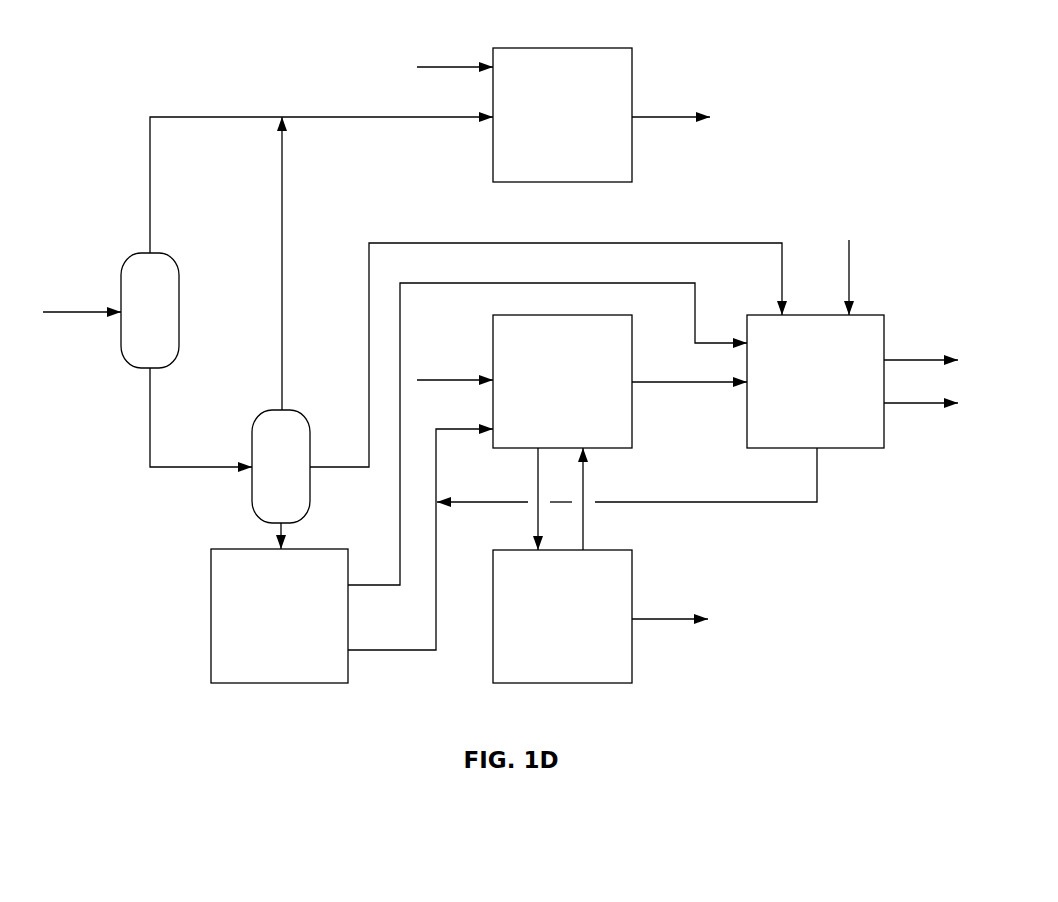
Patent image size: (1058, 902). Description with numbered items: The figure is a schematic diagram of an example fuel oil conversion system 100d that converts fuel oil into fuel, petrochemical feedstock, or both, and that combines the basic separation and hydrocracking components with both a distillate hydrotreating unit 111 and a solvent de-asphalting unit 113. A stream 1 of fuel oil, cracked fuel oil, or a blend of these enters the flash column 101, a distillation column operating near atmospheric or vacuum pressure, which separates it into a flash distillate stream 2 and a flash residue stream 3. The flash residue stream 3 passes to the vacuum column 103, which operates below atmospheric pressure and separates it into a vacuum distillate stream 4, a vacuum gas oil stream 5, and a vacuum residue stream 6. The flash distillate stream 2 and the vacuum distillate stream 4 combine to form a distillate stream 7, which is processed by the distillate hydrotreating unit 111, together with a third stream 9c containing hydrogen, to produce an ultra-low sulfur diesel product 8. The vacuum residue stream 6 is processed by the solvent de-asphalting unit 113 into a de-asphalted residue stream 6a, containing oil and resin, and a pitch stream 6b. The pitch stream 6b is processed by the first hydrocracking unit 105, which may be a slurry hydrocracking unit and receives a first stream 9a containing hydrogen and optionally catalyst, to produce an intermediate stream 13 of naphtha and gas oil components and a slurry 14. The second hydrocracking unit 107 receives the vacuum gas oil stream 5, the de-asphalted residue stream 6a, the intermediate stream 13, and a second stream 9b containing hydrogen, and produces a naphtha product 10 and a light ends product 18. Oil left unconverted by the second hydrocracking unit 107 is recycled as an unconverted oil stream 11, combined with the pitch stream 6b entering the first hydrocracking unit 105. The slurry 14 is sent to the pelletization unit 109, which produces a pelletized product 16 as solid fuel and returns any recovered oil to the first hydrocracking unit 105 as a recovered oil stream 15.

The system 100d is at (860, 644).
The flash column 101 is at (150, 310).
The vacuum column 103 is at (281, 466).
The first hydrocracking unit 105 is at (562, 381).
The second hydrocracking unit 107 is at (815, 381).
The pelletization unit 109 is at (562, 616).
The distillate hydrotreating unit 111 is at (562, 115).
The solvent de-asphalting unit 113 is at (279, 616).
The stream 1 is at (80, 312).
The flash distillate stream 2 is at (213, 117).
The flash residue stream 3 is at (200, 467).
The vacuum distillate stream 4 is at (282, 372).
The vacuum gas oil stream 5 is at (369, 372).
The vacuum residue stream 6 is at (281, 530).
The de-asphalted residue stream 6a is at (400, 532).
The pitch stream 6b is at (436, 629).
The distillate stream 7 is at (370, 117).
The ultra-low sulfur diesel product 8 is at (657, 117).
The first stream 9a is at (454, 380).
The second stream 9b is at (849, 255).
The third stream 9c is at (447, 67).
The naphtha product 10 is at (922, 403).
The unconverted oil stream 11 is at (683, 502).
The intermediate stream 13 is at (654, 382).
The slurry 14 is at (538, 486).
The recovered oil stream 15 is at (583, 517).
The pelletized product 16 is at (661, 619).
The light ends product 18 is at (917, 360).